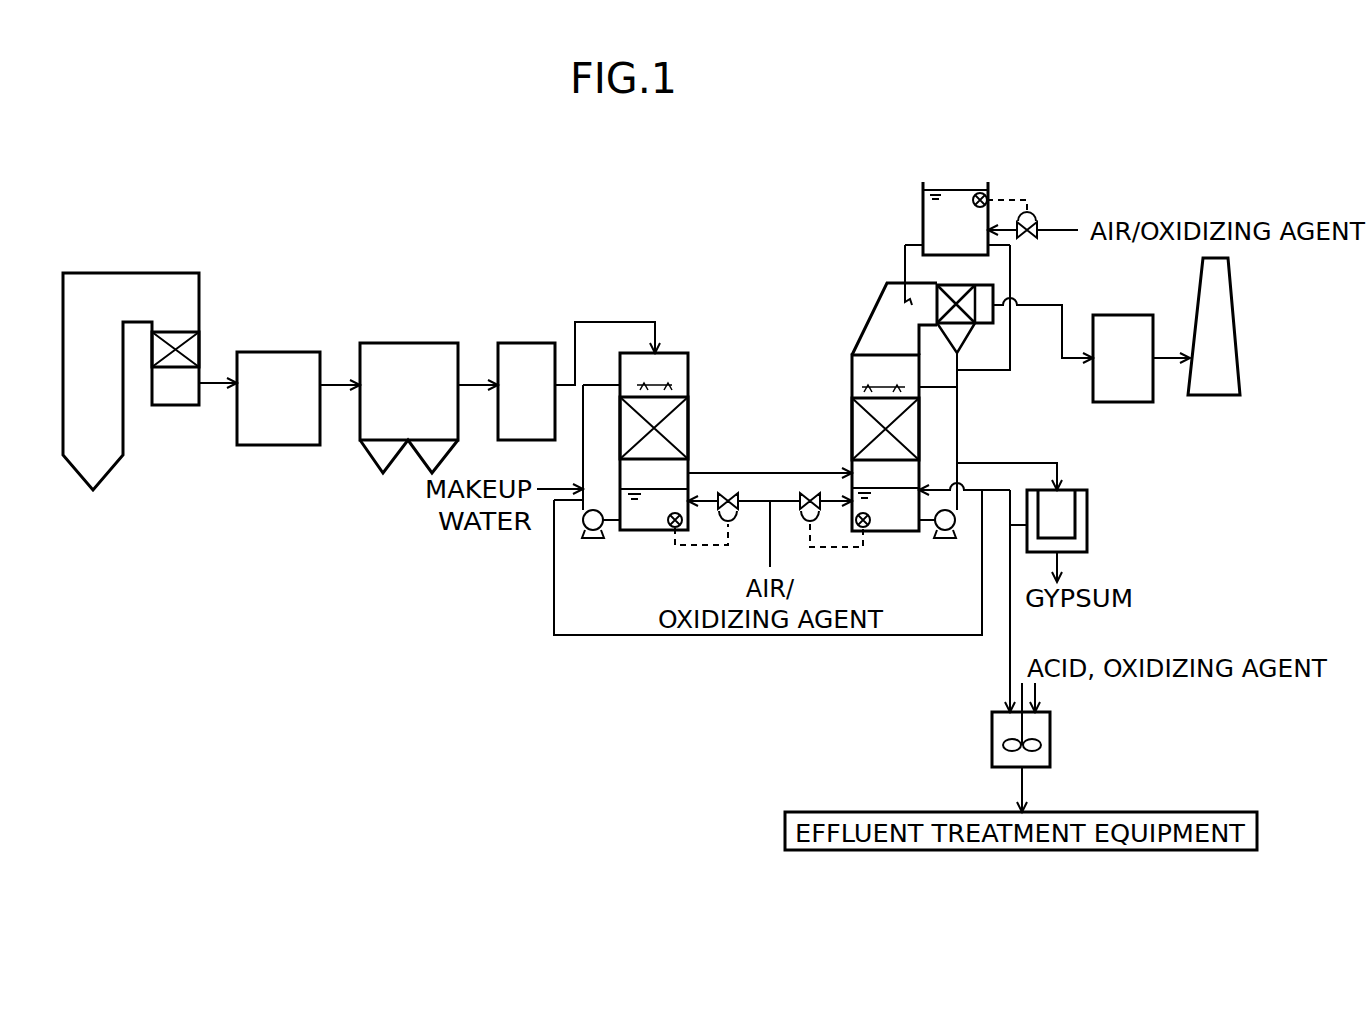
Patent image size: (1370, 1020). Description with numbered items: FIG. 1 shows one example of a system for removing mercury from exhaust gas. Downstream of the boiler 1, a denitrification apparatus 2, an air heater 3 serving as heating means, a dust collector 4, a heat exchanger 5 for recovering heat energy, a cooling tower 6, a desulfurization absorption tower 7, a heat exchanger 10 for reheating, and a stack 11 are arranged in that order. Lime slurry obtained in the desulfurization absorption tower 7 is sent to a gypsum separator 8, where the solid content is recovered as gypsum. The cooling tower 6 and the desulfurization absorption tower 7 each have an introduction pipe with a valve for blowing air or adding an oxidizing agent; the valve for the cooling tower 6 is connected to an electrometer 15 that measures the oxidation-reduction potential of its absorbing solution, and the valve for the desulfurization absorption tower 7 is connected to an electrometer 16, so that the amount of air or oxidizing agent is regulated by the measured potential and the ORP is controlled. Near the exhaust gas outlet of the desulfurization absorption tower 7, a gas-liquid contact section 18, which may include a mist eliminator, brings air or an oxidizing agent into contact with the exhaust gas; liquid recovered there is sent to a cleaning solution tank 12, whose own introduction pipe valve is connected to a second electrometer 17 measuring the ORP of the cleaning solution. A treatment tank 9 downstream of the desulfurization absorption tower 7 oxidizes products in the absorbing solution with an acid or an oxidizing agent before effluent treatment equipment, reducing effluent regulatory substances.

The boiler 1 is at (78, 478).
The denitrification apparatus 2 is at (173, 367).
The air heater 3 is at (270, 352).
The dust collector 4 is at (370, 458).
The heat recovery side heat exchanger 5 is at (512, 343).
The cooling tower 6 is at (662, 530).
The desulfurization absorption tower 7 is at (860, 330).
The gypsum separator 8 is at (1075, 490).
The treatment tank 9 is at (1050, 740).
The reheating side heat exchanger 10 is at (1135, 315).
The stack 11 is at (1238, 335).
The cleaning solution tank 12 is at (923, 218).
The ORP meter 15 is at (667, 530).
The ORP meter 16 is at (870, 530).
The ORP meter 17 is at (980, 193).
The gas-liquid contact section 18 is at (970, 300).